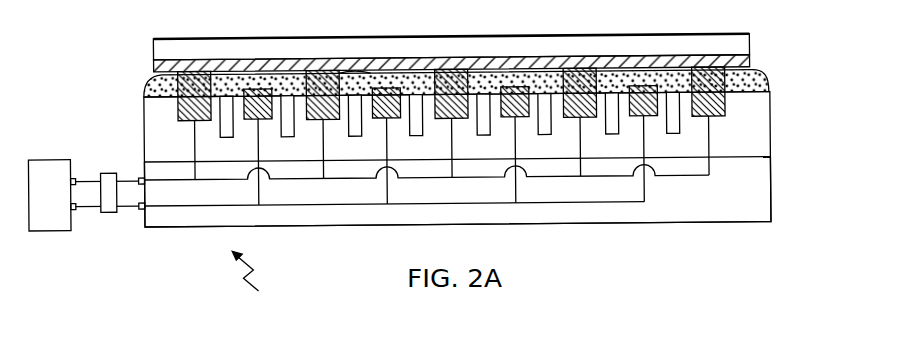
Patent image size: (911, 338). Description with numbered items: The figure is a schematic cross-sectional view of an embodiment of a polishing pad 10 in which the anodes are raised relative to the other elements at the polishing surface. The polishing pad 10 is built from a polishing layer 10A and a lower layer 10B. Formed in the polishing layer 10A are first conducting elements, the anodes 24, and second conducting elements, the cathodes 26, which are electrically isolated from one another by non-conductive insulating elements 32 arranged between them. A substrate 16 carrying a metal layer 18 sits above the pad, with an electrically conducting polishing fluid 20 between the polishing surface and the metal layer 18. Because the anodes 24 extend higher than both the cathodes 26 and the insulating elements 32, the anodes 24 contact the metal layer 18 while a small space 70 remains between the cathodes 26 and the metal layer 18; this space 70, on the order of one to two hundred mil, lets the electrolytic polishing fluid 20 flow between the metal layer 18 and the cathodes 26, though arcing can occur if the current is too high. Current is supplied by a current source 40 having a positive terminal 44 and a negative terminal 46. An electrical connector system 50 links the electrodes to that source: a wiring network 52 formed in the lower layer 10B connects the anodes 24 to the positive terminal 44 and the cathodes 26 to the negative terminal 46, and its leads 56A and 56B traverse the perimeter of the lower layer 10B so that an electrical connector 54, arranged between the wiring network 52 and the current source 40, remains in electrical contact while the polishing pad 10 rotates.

The polishing pad 10 is at (813, 96).
The polishing layer 10A is at (771, 124).
The lower layer 10B is at (773, 203).
The substrate 16 is at (733, 40).
The metal layer 18 is at (689, 67).
The polishing fluid 20 is at (525, 81).
The anodes 24 is at (197, 72).
The cathodes 26 is at (268, 90).
The insulating elements 32 is at (231, 97).
The space 70 is at (360, 87).
The current source 40 is at (44, 230).
The positive terminal 44 is at (73, 178).
The negative terminal 46 is at (75, 210).
The electrical connector system 50 is at (255, 281).
The wiring network 52 is at (430, 180).
The electrical connector 54 is at (109, 213).
The lead 56A is at (142, 178).
The lead 56B is at (143, 210).